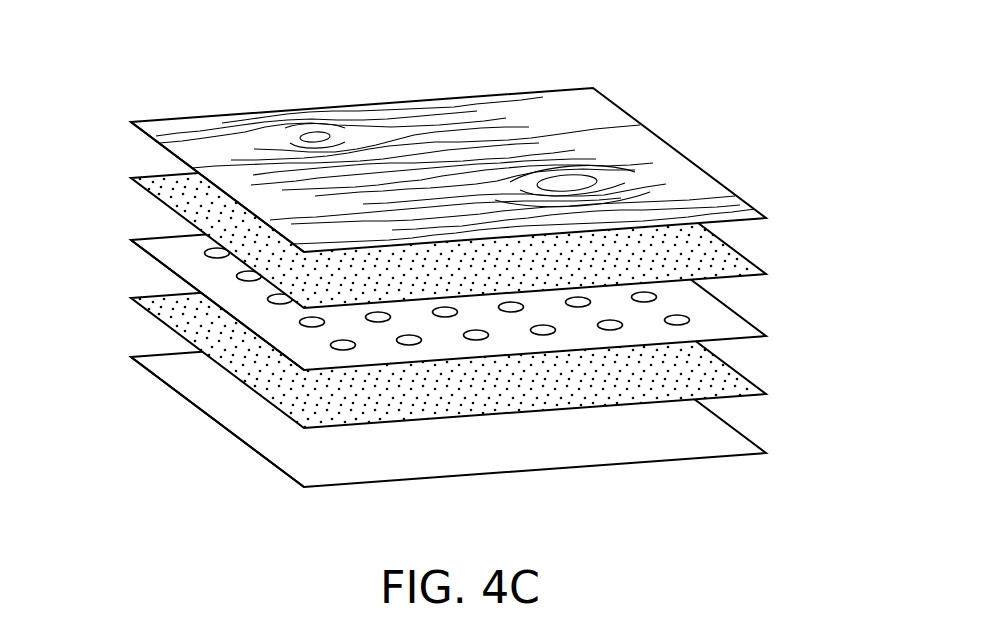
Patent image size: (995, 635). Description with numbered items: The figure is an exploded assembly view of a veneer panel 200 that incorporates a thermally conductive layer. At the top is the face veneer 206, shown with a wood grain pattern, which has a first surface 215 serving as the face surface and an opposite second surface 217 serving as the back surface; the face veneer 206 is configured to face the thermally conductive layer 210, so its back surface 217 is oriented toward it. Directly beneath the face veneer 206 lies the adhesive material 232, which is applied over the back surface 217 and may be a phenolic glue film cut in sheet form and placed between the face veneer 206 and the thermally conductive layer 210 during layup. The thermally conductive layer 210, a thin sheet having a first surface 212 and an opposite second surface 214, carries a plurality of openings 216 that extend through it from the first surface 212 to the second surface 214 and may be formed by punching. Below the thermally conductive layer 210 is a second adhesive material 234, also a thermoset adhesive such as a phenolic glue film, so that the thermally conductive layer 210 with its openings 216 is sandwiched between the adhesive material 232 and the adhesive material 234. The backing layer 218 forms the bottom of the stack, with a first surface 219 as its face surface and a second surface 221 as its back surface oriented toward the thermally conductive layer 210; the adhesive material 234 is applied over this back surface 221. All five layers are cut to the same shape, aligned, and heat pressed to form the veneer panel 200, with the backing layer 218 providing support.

The veneer panel 200 is at (122, 52).
The face veneer 206 is at (441, 144).
The first surface 215 is at (453, 118).
The second surface 217 is at (148, 135).
The adhesive material 232 is at (740, 257).
The thermally conductive layer 210 is at (448, 288).
The first surface 212 is at (393, 299).
The second surface 214 is at (157, 260).
The openings 216 is at (307, 321).
The adhesive material 234 is at (752, 378).
The backing layer 218 is at (476, 405).
The first surface 219 is at (200, 407).
The second surface 221 is at (553, 451).